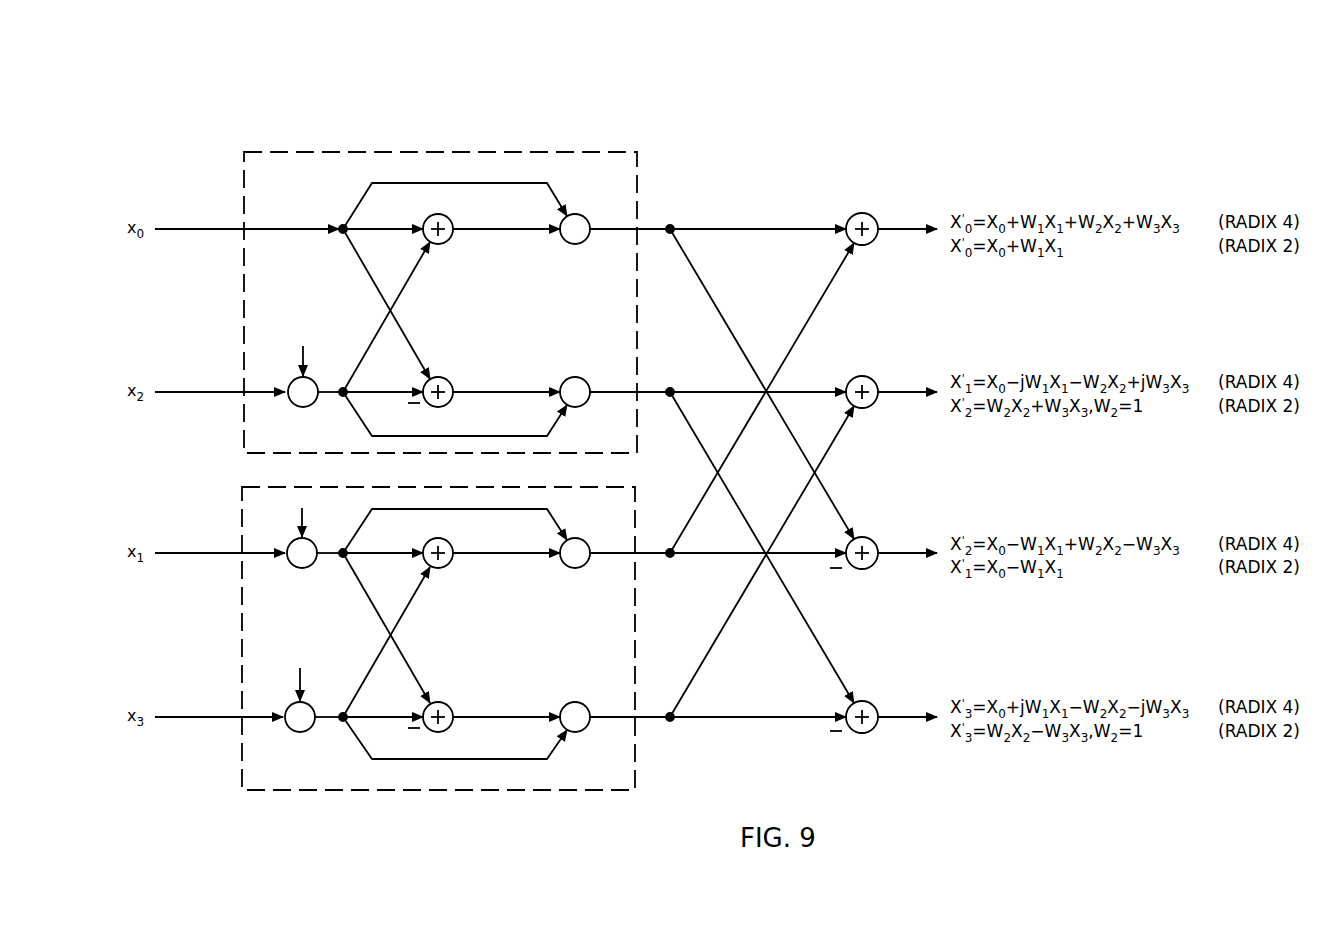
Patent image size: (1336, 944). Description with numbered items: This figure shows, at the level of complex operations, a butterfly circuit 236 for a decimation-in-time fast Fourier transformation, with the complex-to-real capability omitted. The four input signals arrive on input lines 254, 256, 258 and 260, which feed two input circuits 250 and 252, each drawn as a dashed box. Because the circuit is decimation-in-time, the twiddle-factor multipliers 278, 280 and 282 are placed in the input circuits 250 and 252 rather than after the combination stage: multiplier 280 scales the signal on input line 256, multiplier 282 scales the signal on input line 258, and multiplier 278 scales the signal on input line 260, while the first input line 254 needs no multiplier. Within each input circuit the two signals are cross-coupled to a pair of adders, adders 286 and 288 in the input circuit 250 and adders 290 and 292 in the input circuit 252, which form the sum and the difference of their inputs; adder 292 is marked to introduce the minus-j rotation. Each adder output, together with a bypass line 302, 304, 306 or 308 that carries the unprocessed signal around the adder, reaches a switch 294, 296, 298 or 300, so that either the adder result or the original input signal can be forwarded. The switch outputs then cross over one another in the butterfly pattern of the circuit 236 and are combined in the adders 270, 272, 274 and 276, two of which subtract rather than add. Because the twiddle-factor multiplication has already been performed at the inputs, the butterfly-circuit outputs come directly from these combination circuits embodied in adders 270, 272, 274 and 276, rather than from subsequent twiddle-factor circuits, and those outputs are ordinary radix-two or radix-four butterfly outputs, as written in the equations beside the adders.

The butterfly interconnection network 236 is at (794, 168).
The input circuit 250 is at (538, 152).
The input circuit 252 is at (535, 487).
The input x0 254 is at (190, 229).
The input x2 256 is at (190, 392).
The input x1 258 is at (190, 553).
The input x3 260 is at (190, 717).
The adder 270 is at (868, 215).
The adder 272 is at (868, 378).
The adder 274 is at (867, 539).
The adder 276 is at (867, 703).
The twiddle-factor multiplier 278 is at (306, 731).
The twiddle-factor multiplier 280 is at (316, 380).
The twiddle-factor multiplier 282 is at (308, 566).
The adder 286 is at (445, 243).
The adder 288 is at (445, 378).
The adder 290 is at (445, 567).
The adder 292 is at (447, 702).
The switch 294 is at (579, 213).
The switch 296 is at (579, 377).
The switch 298 is at (579, 538).
The switch 300 is at (577, 702).
The bypass path 302 is at (497, 183).
The bypass path 304 is at (460, 436).
The bypass path 306 is at (457, 509).
The line 308 is at (460, 759).